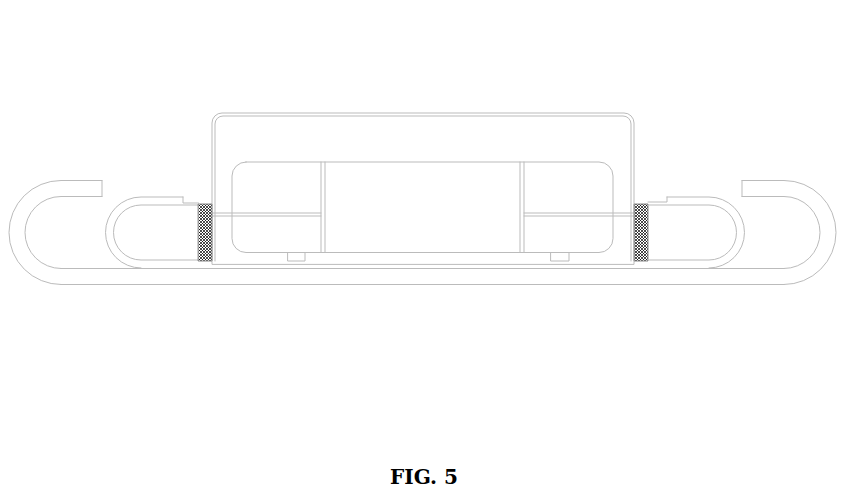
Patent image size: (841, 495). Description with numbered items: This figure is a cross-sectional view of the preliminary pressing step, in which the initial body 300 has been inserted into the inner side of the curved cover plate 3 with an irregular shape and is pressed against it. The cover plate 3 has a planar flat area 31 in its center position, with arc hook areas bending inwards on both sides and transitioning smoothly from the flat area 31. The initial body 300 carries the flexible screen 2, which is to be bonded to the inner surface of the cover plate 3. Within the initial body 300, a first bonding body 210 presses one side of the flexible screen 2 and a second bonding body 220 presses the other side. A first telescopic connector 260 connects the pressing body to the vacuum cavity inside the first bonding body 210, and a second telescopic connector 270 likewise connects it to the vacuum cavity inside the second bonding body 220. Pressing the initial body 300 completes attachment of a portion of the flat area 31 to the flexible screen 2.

The initial body 300 is at (420, 68).
The flexible screen 2 is at (425, 222).
The cover plate 3 is at (422, 222).
The flat area 31 is at (423, 284).
The first bonding body 210 is at (157, 238).
The second bonding body 220 is at (695, 240).
The first telescopic connector 260 is at (205, 261).
The second telescopic connector 270 is at (640, 262).